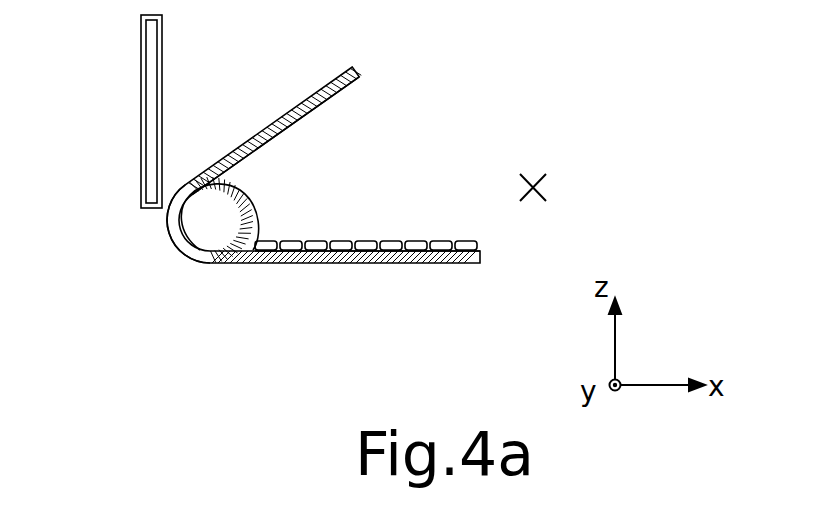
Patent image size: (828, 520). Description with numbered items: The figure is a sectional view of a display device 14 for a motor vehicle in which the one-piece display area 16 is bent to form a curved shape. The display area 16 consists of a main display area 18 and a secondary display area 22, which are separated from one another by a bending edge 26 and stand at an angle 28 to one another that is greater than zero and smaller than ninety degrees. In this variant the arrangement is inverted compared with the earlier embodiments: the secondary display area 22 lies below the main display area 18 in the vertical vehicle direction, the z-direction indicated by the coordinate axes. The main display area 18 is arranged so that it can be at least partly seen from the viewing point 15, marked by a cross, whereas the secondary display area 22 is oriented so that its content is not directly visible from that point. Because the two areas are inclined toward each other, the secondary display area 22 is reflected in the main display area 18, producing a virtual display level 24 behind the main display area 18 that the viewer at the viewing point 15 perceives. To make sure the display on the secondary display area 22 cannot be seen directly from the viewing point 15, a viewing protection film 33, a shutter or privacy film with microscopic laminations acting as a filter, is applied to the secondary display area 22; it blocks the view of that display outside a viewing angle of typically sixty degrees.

The display device 14 is at (105, 203).
The viewing point 15 is at (534, 182).
The display area 16 is at (352, 99).
The main display area 18 is at (304, 116).
The secondary display area 22 is at (322, 240).
The virtual display level 24 is at (153, 115).
The bending edge 26 is at (178, 241).
The angle 28 is at (213, 207).
The viewing protection film 33 is at (287, 240).